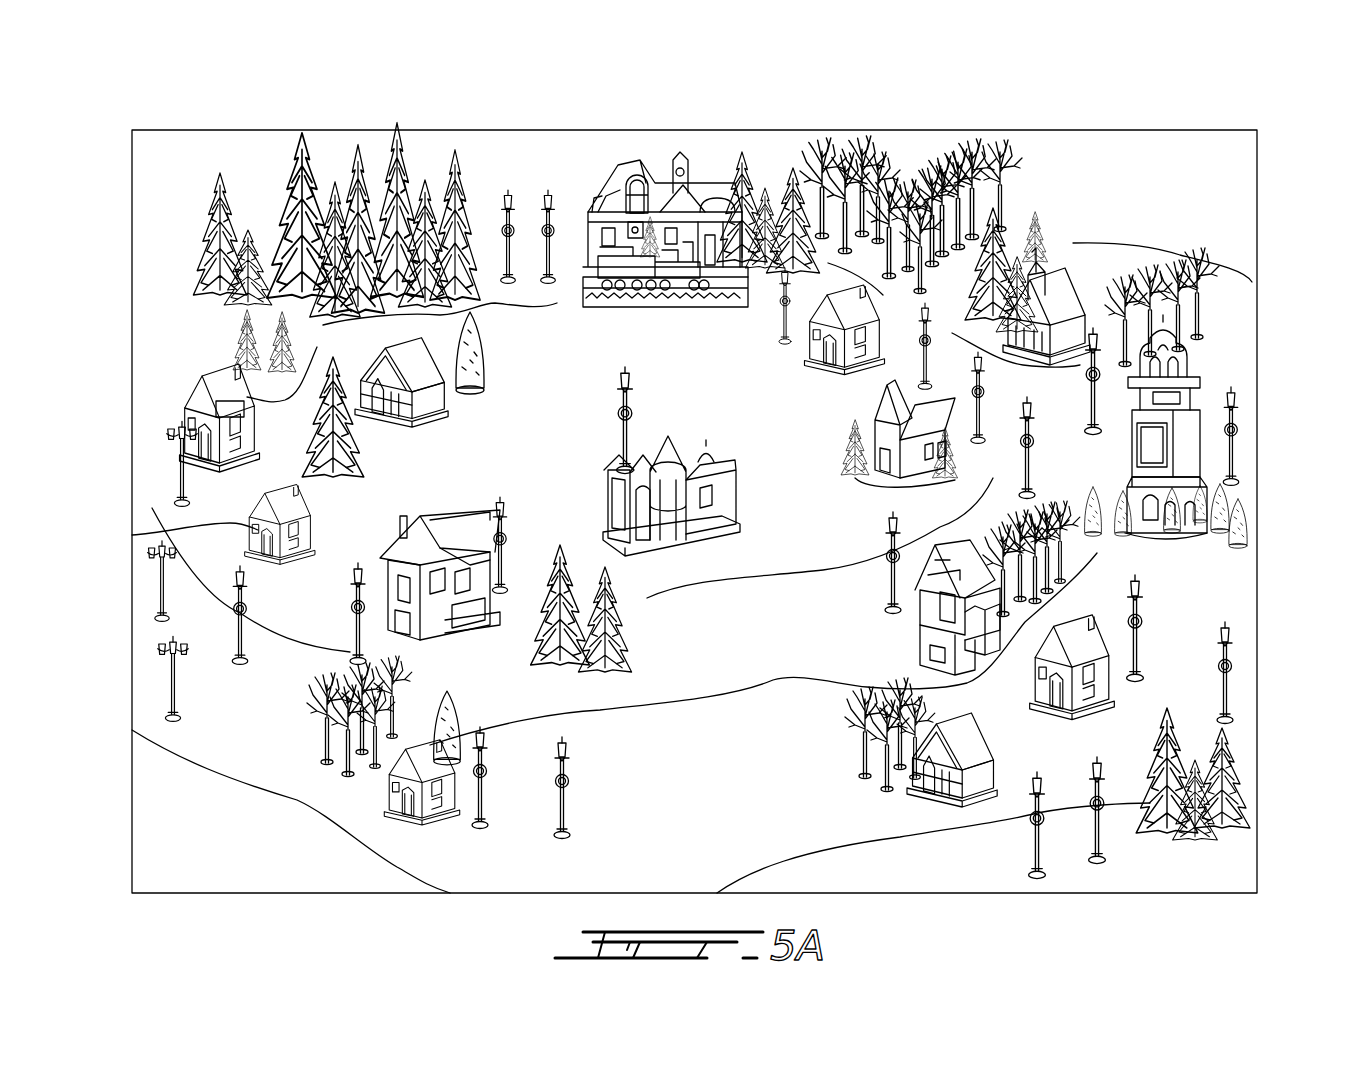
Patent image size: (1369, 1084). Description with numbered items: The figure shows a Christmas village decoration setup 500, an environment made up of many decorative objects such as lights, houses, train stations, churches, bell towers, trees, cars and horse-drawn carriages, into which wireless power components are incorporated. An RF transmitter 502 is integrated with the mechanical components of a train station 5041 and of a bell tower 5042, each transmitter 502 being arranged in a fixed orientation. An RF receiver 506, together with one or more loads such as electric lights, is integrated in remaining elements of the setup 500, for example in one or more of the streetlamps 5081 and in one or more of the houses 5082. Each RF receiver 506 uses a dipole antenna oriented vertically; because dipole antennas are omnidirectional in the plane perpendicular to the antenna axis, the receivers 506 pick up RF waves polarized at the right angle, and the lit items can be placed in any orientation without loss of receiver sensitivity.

The Christmas village decoration setup 500 is at (195, 116).
The RF transmitter 502 is at (1170, 396).
The train station 5041 is at (637, 178).
The bell tower 5042 is at (1163, 358).
The RF receiver 506 is at (226, 408).
The streetlamp 5081 is at (1230, 635).
The house 5082 is at (258, 527).